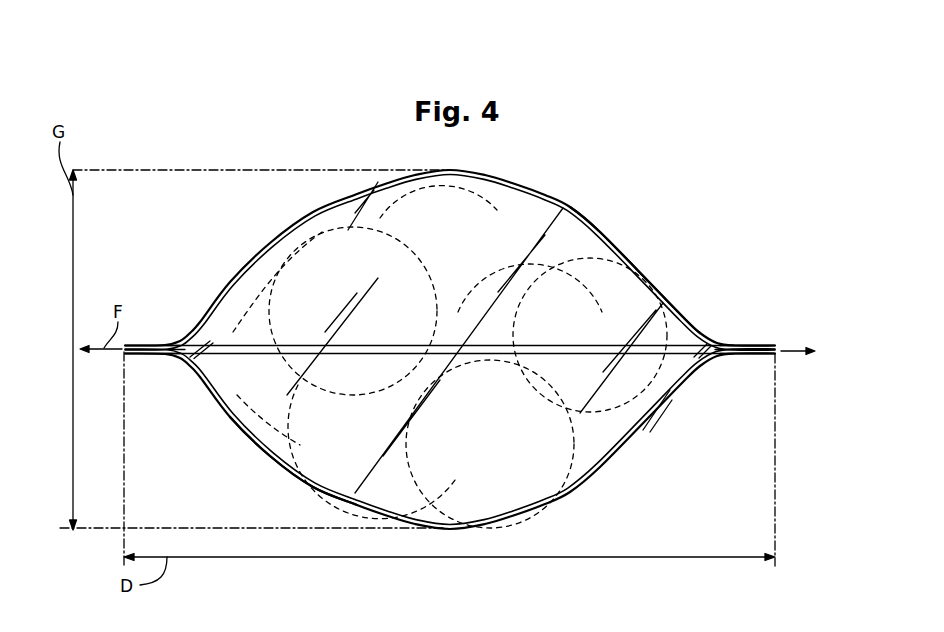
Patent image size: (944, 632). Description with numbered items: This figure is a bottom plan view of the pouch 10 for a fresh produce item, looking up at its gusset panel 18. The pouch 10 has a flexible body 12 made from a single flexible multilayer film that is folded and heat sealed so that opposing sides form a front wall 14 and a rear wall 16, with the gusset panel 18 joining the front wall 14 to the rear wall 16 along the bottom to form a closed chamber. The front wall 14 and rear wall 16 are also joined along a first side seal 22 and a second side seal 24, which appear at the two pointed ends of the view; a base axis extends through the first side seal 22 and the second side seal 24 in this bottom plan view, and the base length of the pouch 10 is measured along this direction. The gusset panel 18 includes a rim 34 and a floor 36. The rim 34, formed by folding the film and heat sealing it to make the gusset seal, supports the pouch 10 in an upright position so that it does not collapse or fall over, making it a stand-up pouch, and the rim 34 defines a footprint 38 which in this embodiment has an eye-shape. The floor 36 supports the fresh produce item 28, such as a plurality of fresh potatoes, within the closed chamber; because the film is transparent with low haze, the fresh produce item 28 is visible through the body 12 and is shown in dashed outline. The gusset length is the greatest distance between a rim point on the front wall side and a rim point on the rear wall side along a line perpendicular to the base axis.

The pouch 10 is at (680, 190).
The flexible body 12 is at (709, 281).
The front wall 14 is at (214, 393).
The rear wall 16 is at (260, 252).
The gusset panel 18 is at (252, 493).
The first side seal 22 is at (146, 345).
The second side seal 24 is at (749, 355).
The fresh produce item 28 is at (652, 431).
The rim 34 is at (584, 207).
The floor 36 is at (512, 406).
The footprint 38 is at (303, 142).